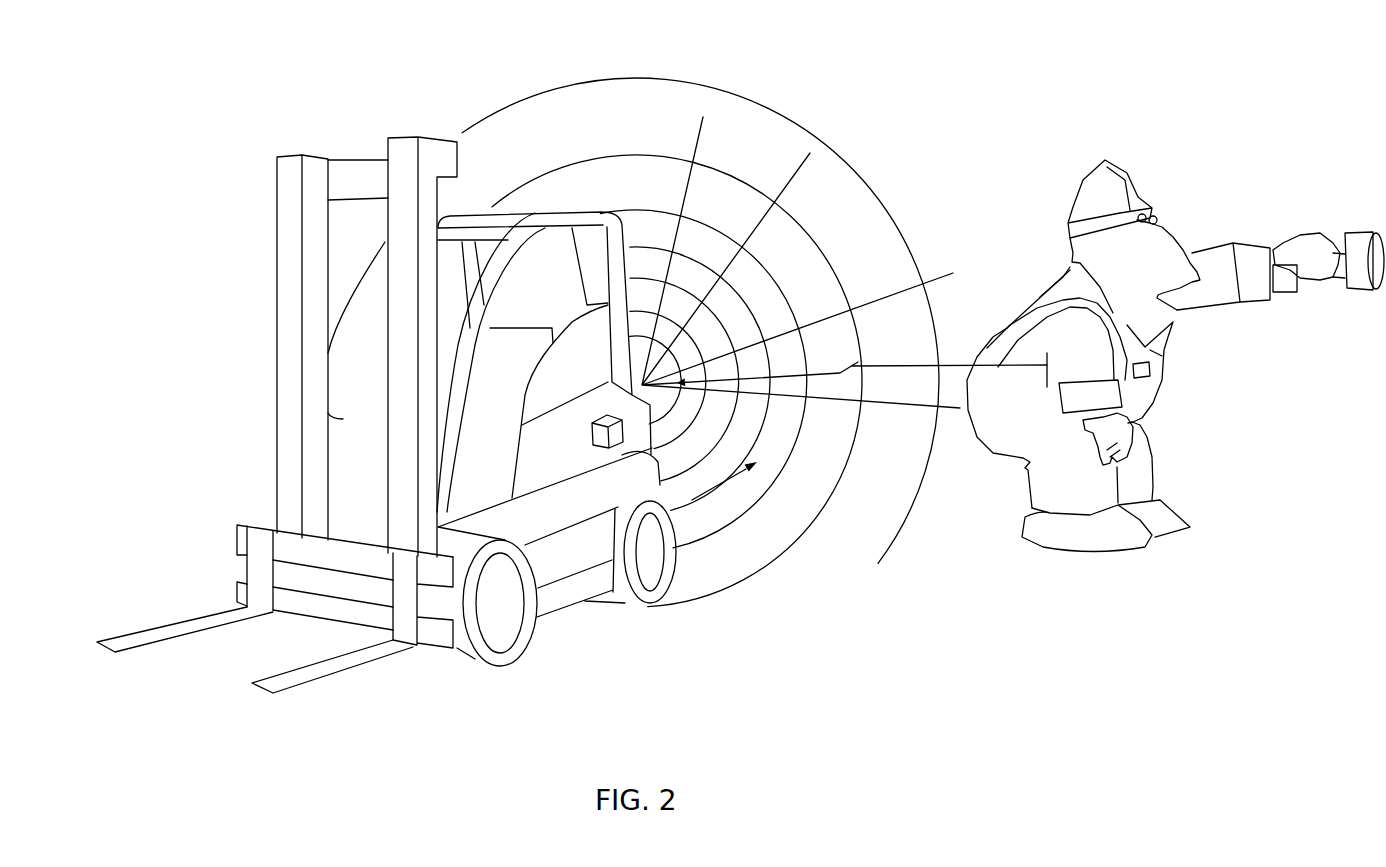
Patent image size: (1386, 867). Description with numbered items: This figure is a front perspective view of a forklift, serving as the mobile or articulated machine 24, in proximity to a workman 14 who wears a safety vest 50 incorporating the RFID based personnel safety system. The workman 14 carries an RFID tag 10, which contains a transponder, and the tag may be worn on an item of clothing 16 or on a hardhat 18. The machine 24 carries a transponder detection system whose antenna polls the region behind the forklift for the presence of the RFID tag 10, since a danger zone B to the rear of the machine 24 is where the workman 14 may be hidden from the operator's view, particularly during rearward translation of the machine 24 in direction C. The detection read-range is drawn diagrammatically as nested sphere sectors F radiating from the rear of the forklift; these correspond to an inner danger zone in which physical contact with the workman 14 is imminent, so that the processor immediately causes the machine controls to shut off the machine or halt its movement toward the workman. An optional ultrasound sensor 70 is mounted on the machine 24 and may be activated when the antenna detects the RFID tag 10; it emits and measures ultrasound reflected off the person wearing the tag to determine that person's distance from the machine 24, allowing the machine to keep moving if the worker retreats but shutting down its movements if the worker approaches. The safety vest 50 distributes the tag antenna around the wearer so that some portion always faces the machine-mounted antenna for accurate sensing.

The mobile or articulated machine 24 is at (237, 300).
The ultrasound sensor 70 is at (609, 447).
The detection zone F is at (752, 102).
The danger zone B is at (844, 262).
The direction of rearward translation C is at (736, 473).
The workman 14 is at (1178, 213).
The hardhat 18 is at (1105, 160).
The safety vest 50 is at (1018, 302).
The item of clothing 16 is at (1158, 353).
The RFID tag 10 is at (1142, 377).